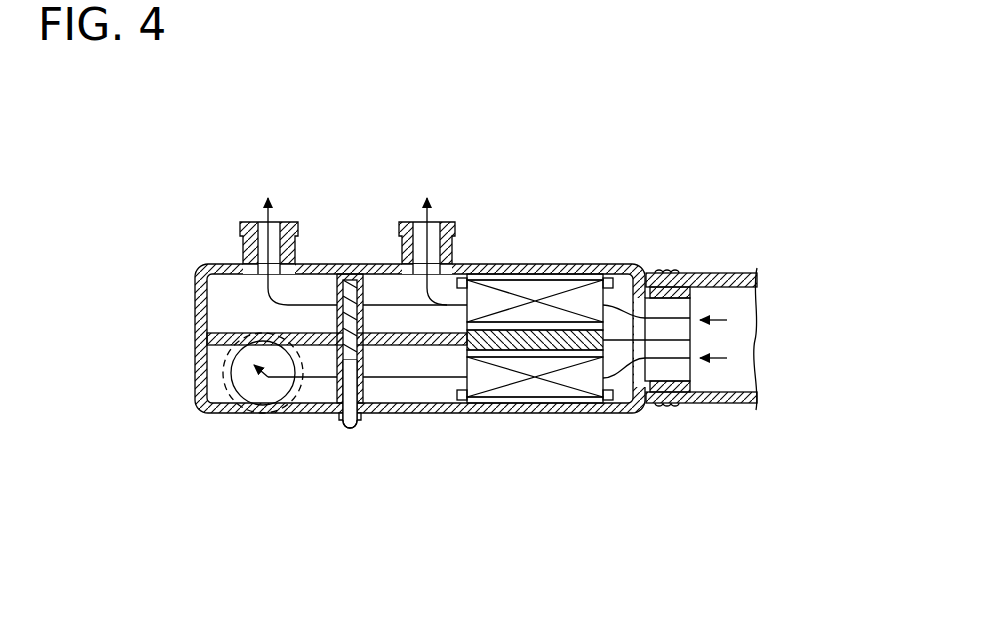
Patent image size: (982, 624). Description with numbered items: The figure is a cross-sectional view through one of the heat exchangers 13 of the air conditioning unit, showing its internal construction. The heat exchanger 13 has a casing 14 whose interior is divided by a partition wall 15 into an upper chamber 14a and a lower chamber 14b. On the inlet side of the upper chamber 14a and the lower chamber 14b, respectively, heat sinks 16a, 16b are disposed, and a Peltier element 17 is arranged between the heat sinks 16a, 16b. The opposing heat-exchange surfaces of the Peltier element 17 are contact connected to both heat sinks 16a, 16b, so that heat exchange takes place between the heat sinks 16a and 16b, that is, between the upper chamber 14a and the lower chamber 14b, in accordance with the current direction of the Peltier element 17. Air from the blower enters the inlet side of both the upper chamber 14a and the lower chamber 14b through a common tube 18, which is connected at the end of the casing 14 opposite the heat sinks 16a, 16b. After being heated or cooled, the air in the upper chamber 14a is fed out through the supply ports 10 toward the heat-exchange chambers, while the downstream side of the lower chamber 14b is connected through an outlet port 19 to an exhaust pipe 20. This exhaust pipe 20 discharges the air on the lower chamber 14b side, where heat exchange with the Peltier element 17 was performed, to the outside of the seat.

The supply port 10 is at (245, 249).
The heat exchanger 13 is at (588, 246).
The casing 14 is at (437, 415).
The upper chamber 14a is at (383, 282).
The lower chamber 14b is at (386, 402).
The partition wall 15 is at (232, 338).
The heat sink 16a is at (537, 285).
The heat sink 16b is at (515, 402).
The Peltier element 17 is at (562, 348).
The common tube 18 is at (718, 274).
The outlet port 19 is at (262, 402).
The exhaust pipe 20 is at (224, 420).